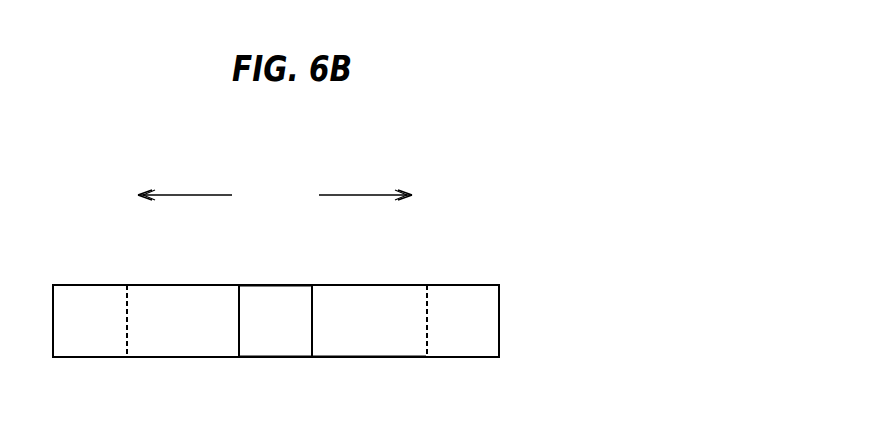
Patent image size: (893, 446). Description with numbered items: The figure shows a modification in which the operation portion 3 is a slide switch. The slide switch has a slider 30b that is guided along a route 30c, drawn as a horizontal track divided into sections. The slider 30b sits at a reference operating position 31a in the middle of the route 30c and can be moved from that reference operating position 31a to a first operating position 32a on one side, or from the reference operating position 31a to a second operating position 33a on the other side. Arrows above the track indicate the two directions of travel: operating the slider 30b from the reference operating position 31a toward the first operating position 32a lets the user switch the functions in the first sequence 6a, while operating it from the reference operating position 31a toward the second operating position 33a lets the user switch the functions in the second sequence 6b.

The operation portion 3 is at (517, 153).
The first sequence 6a is at (358, 193).
The second sequence 6b is at (185, 193).
The slider 30b is at (272, 337).
The route 30c is at (356, 357).
The reference operating position 31a is at (276, 265).
The first operating position 32a is at (462, 265).
The second operating position 33a is at (89, 265).